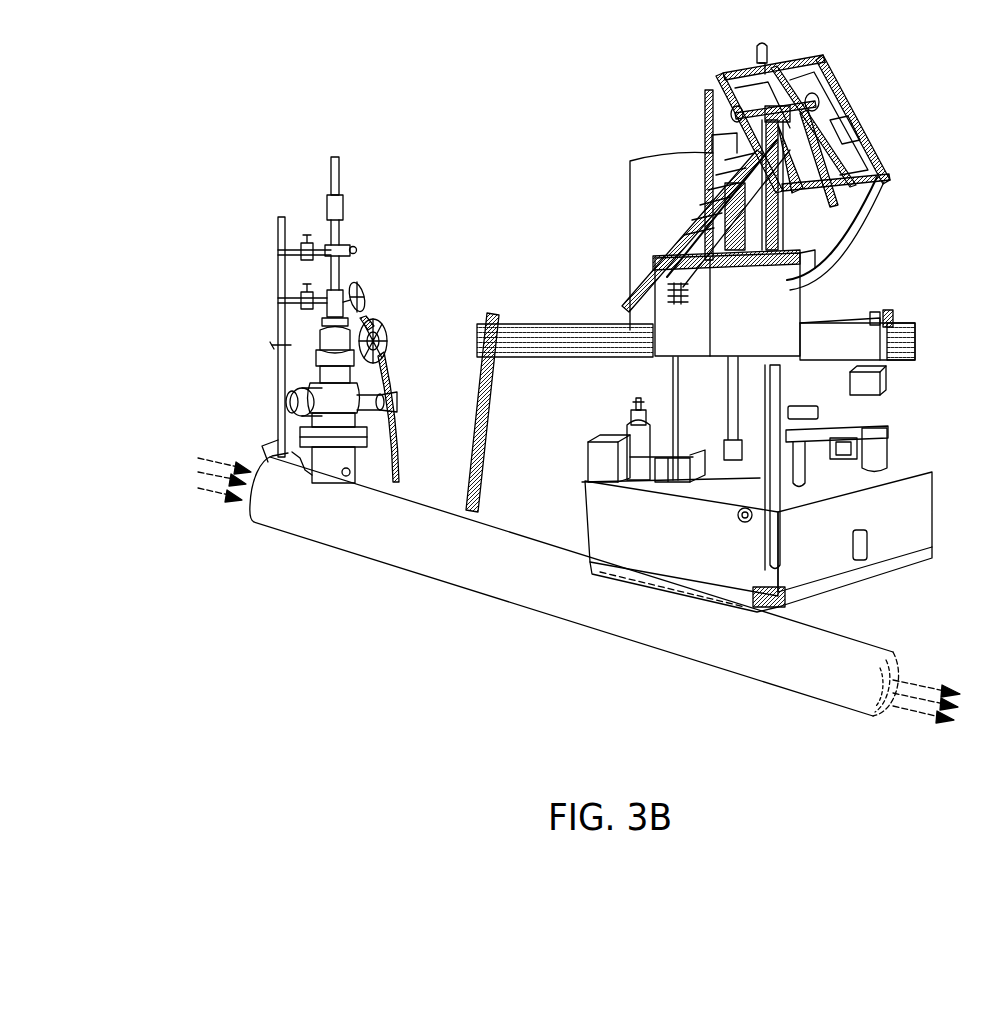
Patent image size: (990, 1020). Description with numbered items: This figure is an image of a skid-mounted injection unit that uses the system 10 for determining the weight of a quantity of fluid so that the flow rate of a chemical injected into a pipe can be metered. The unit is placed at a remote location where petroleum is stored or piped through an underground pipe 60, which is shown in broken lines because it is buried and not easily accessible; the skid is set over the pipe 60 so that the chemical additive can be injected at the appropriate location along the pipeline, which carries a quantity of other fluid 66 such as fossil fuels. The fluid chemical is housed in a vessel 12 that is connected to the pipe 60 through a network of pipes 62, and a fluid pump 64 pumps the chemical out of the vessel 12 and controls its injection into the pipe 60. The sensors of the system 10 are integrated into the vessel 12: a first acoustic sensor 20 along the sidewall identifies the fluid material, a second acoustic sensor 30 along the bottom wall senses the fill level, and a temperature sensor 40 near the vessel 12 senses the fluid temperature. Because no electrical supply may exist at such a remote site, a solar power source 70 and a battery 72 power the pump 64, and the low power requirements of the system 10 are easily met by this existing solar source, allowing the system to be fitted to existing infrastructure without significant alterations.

The system 10 is at (188, 128).
The vessel 12 is at (875, 349).
The first acoustic sensor 20 is at (877, 382).
The second acoustic sensor 30 is at (847, 448).
The temperature sensor 40 is at (820, 415).
The pipe 60 is at (610, 612).
The network of pipes 62 is at (633, 410).
The fluid pump 64 is at (587, 467).
The quantity of other fluid 66 is at (907, 678).
The solar power source 70 is at (870, 140).
The battery 72 is at (787, 282).